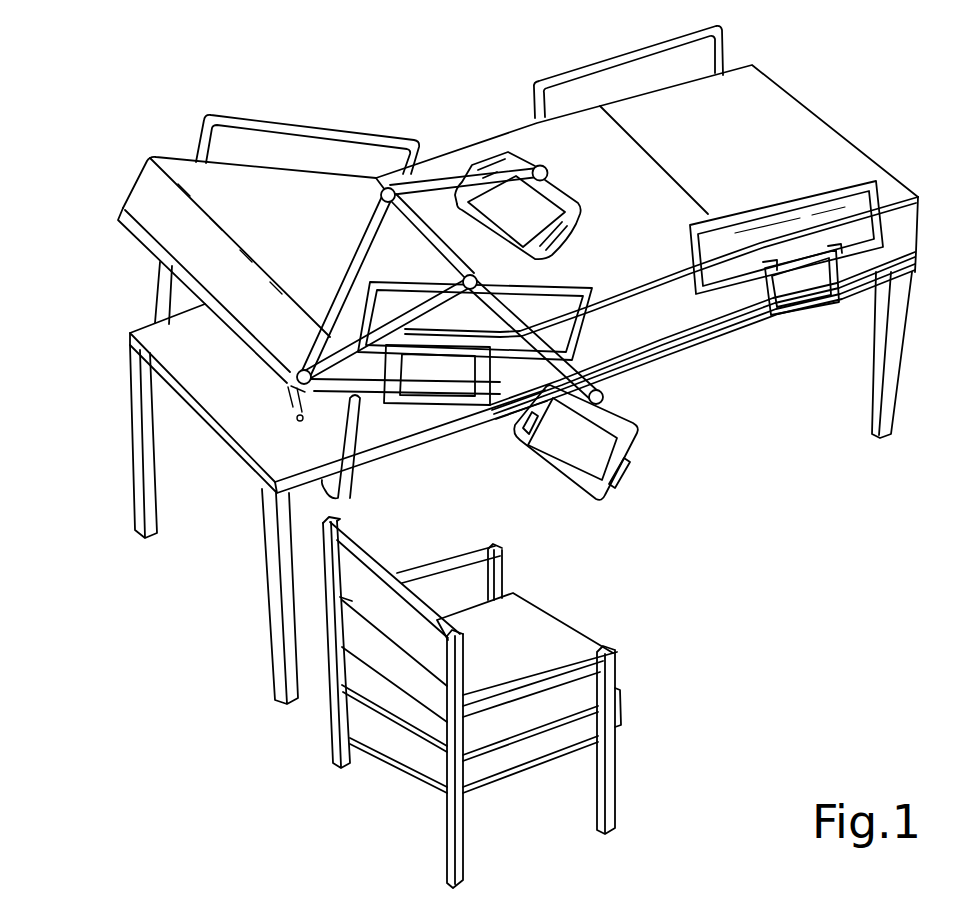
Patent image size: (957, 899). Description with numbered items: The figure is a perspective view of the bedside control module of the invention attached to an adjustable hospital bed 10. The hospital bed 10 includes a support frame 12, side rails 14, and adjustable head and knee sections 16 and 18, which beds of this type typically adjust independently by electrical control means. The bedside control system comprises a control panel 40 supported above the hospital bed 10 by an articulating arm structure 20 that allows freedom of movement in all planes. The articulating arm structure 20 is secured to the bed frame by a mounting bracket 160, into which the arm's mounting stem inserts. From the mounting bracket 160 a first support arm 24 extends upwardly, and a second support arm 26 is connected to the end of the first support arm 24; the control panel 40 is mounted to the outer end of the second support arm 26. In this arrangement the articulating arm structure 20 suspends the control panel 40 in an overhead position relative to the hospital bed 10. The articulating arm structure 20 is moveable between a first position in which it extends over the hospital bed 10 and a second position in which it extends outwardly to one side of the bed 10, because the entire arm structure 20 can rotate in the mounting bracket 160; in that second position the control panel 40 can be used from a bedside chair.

The hospital bed 10 is at (352, 106).
The support frame 12 is at (158, 332).
The side rails 14 is at (200, 134).
The head section 16 is at (308, 247).
The knee section 18 is at (737, 169).
The articulating arm structure 20 is at (429, 165).
The first support arm 24 is at (343, 303).
The second support arm 26 is at (484, 155).
The control panel 40 is at (645, 420).
The mounting bracket 160 is at (236, 386).